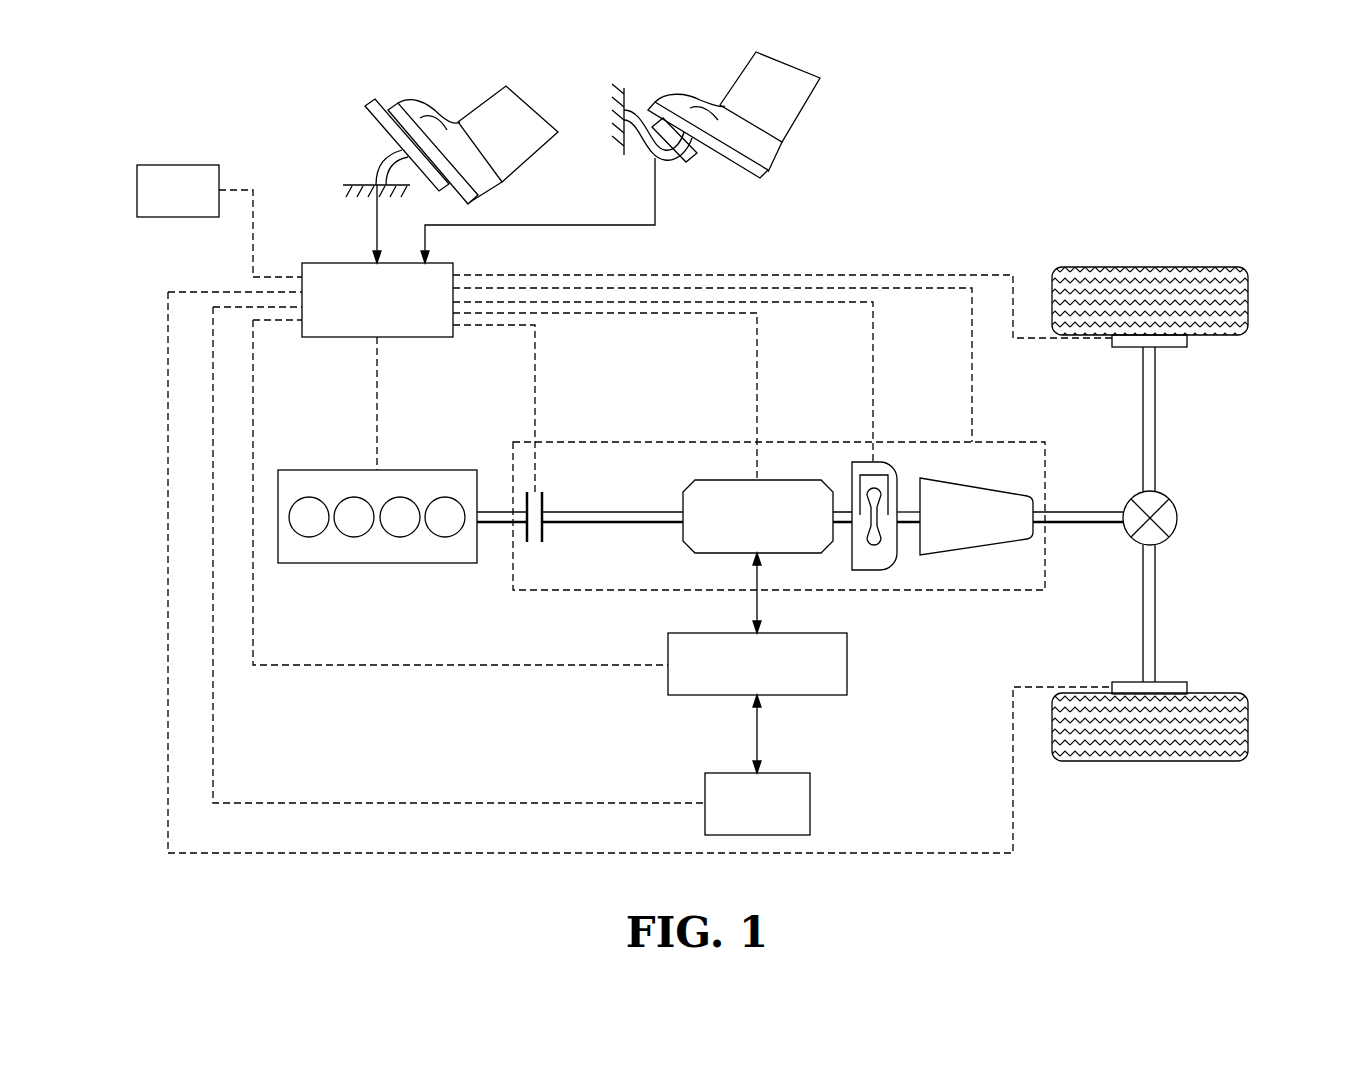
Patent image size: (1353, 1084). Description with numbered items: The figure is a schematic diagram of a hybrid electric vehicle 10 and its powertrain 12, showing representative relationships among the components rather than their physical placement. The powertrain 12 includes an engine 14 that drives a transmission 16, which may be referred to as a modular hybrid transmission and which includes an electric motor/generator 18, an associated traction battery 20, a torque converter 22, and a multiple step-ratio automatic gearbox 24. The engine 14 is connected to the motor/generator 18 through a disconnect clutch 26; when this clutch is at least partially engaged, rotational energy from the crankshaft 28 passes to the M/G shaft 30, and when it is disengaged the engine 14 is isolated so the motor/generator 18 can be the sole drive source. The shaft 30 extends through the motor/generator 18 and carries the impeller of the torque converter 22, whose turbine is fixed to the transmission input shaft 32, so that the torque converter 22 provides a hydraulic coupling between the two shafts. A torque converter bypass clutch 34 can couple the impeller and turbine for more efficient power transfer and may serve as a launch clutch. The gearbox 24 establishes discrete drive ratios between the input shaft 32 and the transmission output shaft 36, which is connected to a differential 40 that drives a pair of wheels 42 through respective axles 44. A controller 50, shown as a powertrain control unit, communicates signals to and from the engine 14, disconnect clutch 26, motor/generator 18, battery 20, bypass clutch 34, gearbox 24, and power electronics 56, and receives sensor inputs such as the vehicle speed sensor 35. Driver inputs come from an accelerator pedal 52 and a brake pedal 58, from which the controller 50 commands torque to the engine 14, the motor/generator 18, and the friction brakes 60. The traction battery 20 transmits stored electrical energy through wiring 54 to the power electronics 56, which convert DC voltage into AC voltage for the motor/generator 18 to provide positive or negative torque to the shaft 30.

The hybrid electric vehicle 10 is at (950, 168).
The powertrain 12 is at (520, 692).
The engine 14 is at (330, 470).
The transmission 16 is at (837, 442).
The electric motor/generator 18 is at (725, 480).
The traction battery 20 is at (810, 800).
The torque converter 22 is at (870, 572).
The gearbox 24 is at (975, 555).
The disconnect clutch 26 is at (552, 495).
The crankshaft 28 is at (503, 512).
The M/G shaft 30 is at (626, 512).
The transmission input shaft 32 is at (907, 512).
The torque converter bypass clutch 34 is at (875, 470).
The vehicle speed sensor 35 is at (185, 165).
The transmission output shaft 36 is at (1090, 512).
The differential 40 is at (1178, 518).
The wheels 42 is at (1150, 267).
The axles 44 is at (1157, 412).
The controller 50 is at (340, 263).
The accelerator pedal 52 is at (380, 135).
The wiring 54 is at (762, 740).
The power electronics 56 is at (847, 663).
The brake pedal 58 is at (693, 163).
The friction brakes 60 is at (1190, 340).